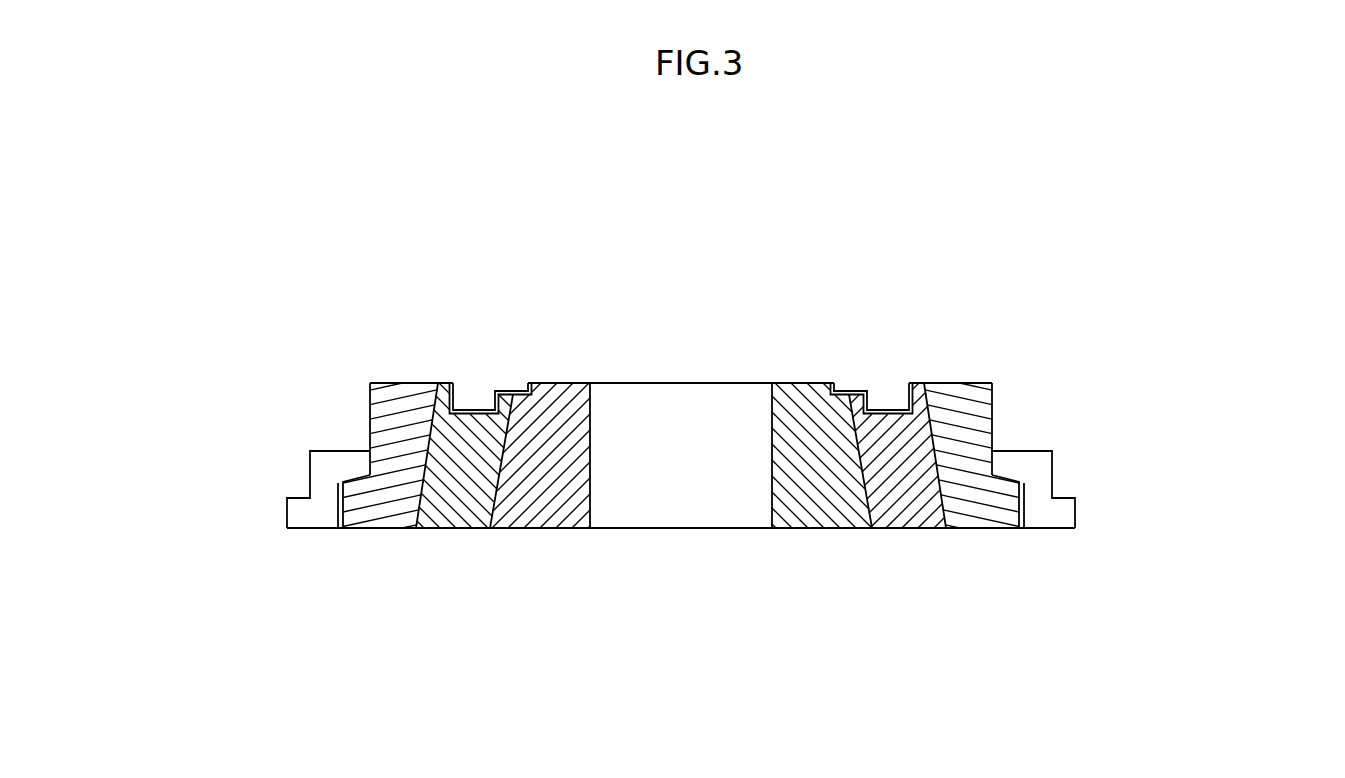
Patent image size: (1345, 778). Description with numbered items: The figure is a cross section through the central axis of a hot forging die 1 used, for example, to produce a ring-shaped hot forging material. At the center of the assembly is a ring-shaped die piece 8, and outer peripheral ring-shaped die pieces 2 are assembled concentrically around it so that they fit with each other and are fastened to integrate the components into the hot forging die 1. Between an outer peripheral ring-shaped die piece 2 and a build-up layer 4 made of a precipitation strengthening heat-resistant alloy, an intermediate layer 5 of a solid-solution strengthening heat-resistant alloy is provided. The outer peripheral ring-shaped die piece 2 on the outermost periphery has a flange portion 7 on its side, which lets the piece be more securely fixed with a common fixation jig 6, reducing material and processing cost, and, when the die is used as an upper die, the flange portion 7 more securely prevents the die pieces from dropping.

The hot forging die 1 is at (642, 368).
The outer peripheral ring-shaped die piece 2 is at (897, 438).
The build-up layer 4 is at (514, 386).
The intermediate layer 5 is at (461, 383).
The fixation jig 6 is at (296, 517).
The flange portion 7 is at (1024, 493).
The ring-shaped die piece 8 is at (808, 382).